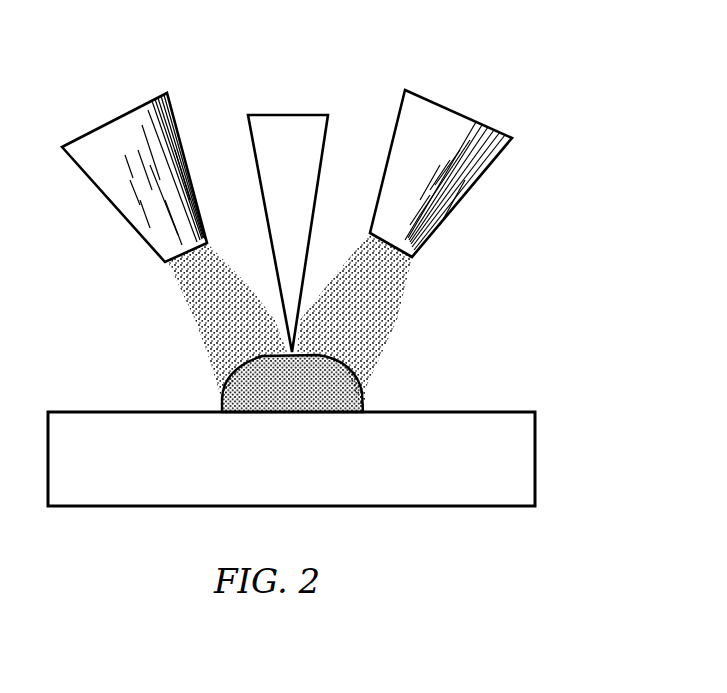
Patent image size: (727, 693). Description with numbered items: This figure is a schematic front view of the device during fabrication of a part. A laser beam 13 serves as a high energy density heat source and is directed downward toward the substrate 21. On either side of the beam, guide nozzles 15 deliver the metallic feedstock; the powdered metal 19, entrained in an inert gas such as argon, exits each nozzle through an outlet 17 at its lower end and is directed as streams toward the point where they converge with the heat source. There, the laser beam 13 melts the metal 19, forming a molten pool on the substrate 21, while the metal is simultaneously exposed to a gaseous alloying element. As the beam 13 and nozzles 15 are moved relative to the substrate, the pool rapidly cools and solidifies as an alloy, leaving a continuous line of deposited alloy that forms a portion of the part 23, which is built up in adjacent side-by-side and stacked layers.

The laser beam 13 is at (270, 128).
The guide nozzle 15 is at (460, 173).
The outlet 17 is at (165, 262).
The powdered metal 19 is at (375, 320).
The substrate 21 is at (537, 450).
The part 23 is at (222, 387).